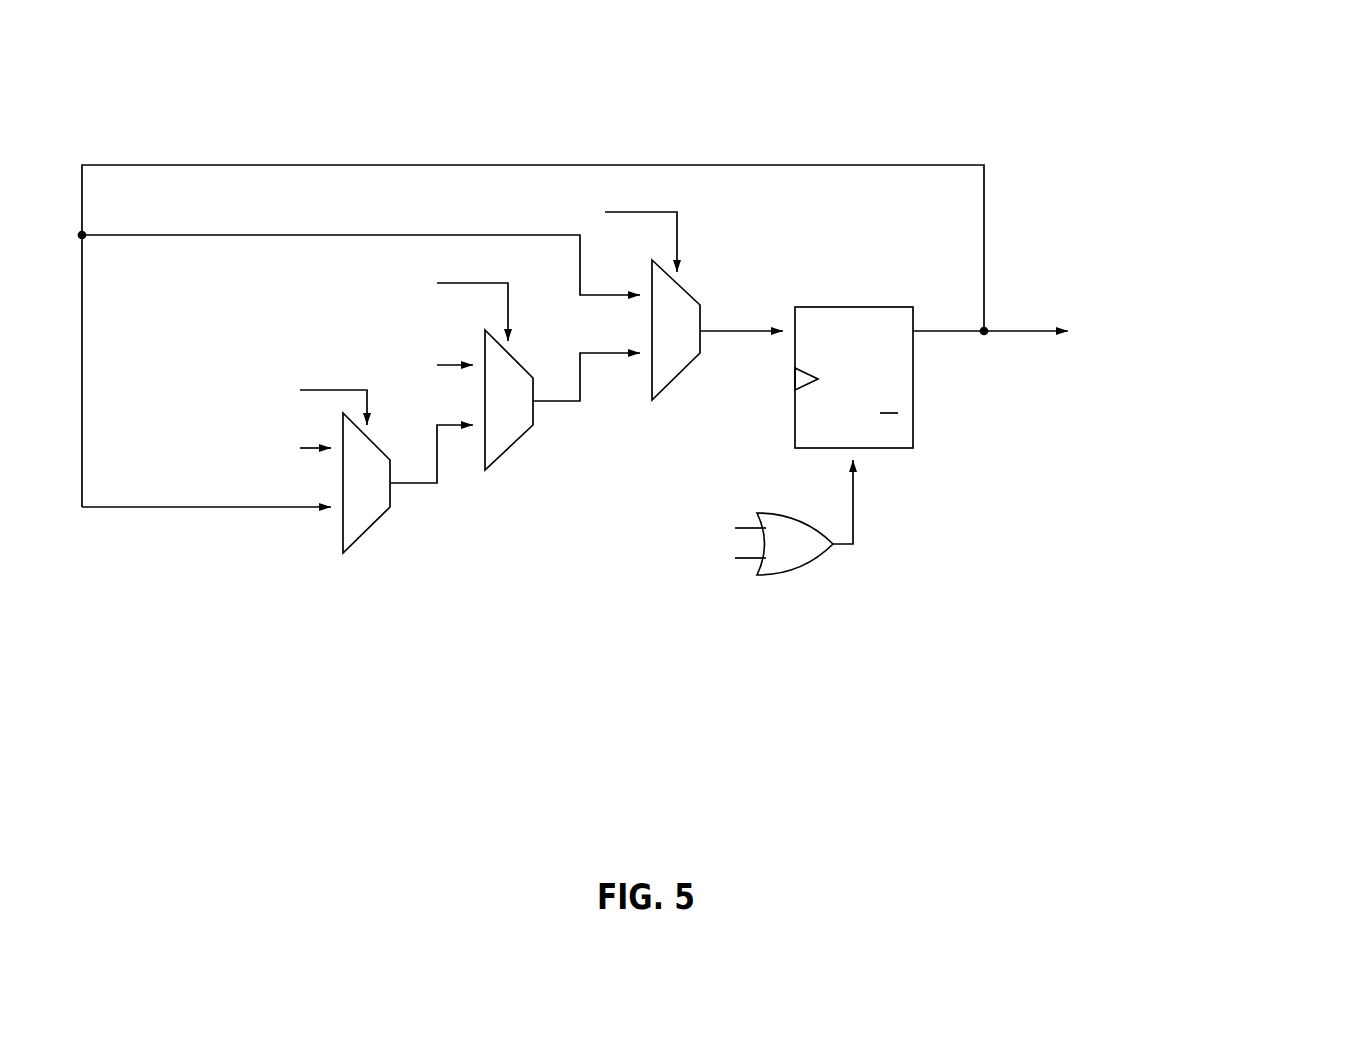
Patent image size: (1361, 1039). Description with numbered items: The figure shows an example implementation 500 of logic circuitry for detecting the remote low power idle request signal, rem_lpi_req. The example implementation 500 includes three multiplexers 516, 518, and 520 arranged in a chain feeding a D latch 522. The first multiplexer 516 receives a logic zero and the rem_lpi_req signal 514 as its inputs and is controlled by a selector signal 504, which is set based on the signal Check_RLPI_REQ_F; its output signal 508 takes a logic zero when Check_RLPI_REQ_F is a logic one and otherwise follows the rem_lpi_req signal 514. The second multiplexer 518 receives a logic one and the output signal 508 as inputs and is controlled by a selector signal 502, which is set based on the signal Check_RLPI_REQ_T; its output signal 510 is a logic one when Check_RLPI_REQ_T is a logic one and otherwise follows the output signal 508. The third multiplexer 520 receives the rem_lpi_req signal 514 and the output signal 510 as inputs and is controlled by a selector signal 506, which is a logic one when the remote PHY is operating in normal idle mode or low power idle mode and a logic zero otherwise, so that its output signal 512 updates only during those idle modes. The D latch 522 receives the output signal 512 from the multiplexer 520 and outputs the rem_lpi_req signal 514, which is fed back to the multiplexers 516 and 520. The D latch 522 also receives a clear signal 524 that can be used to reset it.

The example implementation 500 is at (1359, 59).
The selector signal 502 is at (472, 283).
The selector signal 504 is at (343, 390).
The selector signal 506 is at (650, 212).
The output signal 508 is at (398, 484).
The output signal 510 is at (565, 402).
The output signal 512 is at (715, 331).
The rem_lpi_req signal 514 is at (1013, 333).
The multiplexer 516 is at (356, 540).
The multiplexer 518 is at (520, 437).
The multiplexer 520 is at (675, 378).
The D latch 522 is at (828, 307).
The clear signal 524 is at (853, 500).